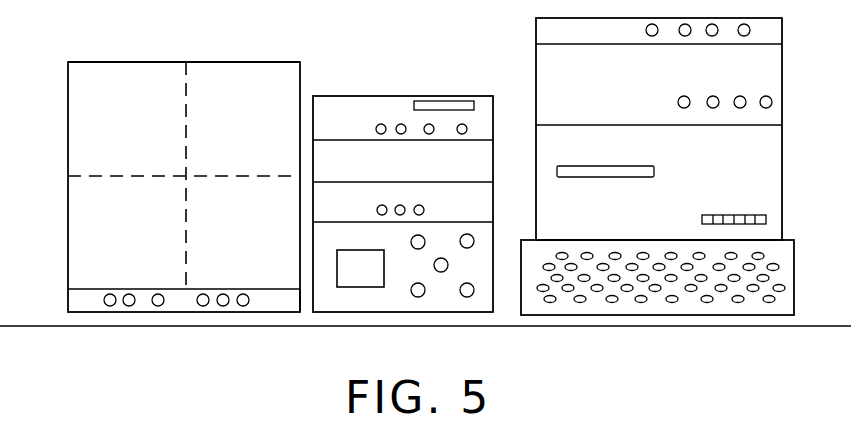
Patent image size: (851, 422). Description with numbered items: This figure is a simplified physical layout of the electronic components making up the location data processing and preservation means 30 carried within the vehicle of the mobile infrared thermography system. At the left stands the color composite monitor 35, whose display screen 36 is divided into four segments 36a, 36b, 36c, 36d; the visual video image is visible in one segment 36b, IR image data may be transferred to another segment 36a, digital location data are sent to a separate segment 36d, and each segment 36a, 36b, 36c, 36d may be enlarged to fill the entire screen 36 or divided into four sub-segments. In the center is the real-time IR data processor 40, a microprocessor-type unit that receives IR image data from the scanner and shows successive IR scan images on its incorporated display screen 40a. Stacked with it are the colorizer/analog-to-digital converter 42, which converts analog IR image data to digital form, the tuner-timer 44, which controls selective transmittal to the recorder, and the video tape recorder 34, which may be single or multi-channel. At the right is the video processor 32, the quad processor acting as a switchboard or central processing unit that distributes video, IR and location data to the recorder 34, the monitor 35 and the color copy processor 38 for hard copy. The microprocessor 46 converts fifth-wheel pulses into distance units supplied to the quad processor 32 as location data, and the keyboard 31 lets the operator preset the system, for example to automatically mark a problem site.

The location data processing and preservation means 30 is at (561, 346).
The keyboard 31 is at (680, 289).
The video processor 32 is at (659, 129).
The video tape recorder 34 is at (391, 106).
The color composite monitor 35 is at (224, 306).
The display screen 36 is at (157, 192).
The display screen segment 36a is at (256, 78).
The display screen segment 36b is at (110, 72).
The display screen segment 36c is at (77, 238).
The display screen segment 36d is at (279, 280).
The color copy processor 38 is at (768, 168).
The real-time IR data processor 40 is at (403, 214).
The display screen 40a is at (362, 279).
The colorizer/analog-to-digital converter 42 is at (341, 200).
The tuner-timer 44 is at (355, 148).
The microprocessor 46 is at (562, 29).